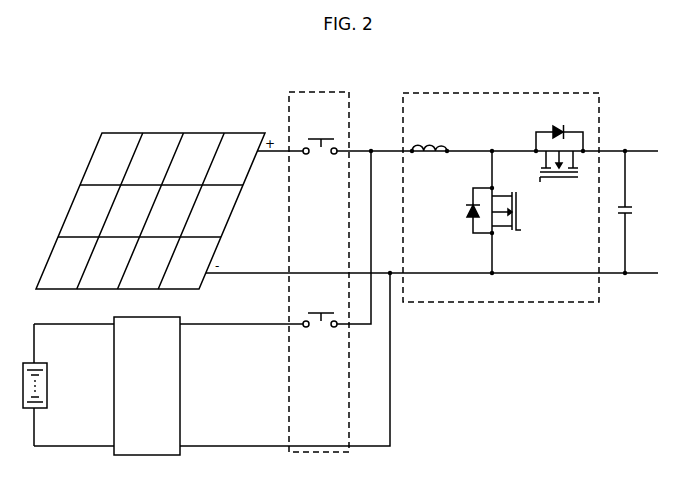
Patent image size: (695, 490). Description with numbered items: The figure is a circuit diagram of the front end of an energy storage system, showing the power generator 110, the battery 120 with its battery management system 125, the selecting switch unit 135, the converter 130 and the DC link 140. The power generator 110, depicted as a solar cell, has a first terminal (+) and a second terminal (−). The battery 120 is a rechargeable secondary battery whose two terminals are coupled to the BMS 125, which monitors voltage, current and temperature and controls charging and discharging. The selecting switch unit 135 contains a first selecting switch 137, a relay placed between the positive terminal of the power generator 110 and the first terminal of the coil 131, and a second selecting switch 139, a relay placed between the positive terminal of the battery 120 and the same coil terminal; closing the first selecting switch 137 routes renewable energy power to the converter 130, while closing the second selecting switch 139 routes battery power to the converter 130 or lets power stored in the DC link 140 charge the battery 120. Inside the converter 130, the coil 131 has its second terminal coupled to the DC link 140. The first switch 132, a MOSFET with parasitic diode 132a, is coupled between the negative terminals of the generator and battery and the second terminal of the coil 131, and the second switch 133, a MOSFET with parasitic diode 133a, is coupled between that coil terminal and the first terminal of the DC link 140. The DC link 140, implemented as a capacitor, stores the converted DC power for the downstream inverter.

The power generator 110 is at (167, 133).
The battery 120 is at (50, 385).
The battery management system 125 is at (183, 385).
The converter 130 is at (500, 93).
The coil 131 is at (428, 144).
The first switch 132 is at (521, 215).
The parasitic diode 132a is at (466, 210).
The second switch 133 is at (560, 180).
The parasitic diode 133a is at (556, 125).
The selecting switch unit 135 is at (322, 92).
The first selecting switch 137 is at (320, 137).
The second selecting switch 139 is at (320, 311).
The DC link 140 is at (637, 212).